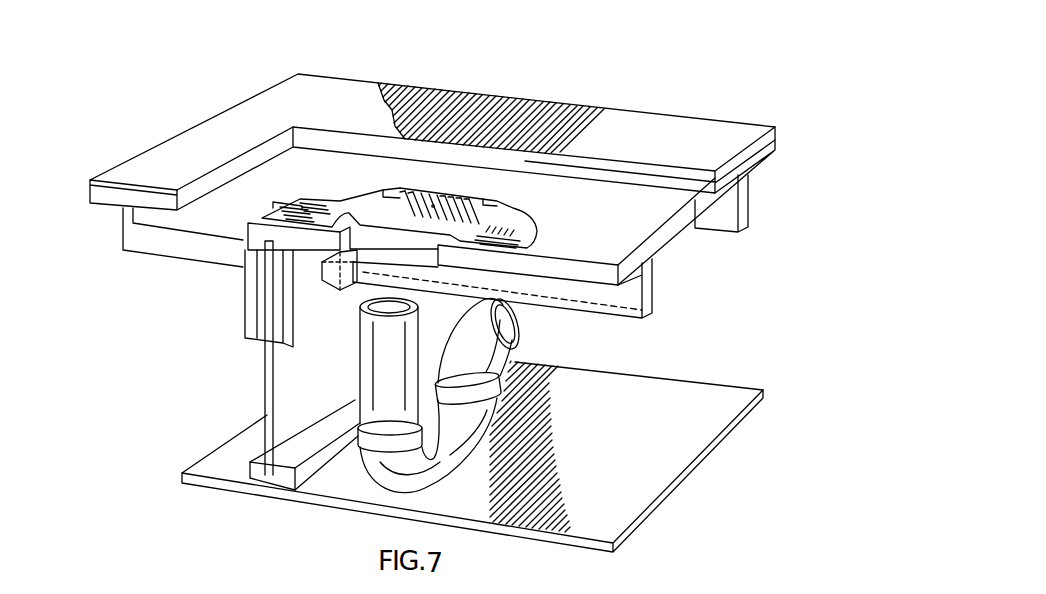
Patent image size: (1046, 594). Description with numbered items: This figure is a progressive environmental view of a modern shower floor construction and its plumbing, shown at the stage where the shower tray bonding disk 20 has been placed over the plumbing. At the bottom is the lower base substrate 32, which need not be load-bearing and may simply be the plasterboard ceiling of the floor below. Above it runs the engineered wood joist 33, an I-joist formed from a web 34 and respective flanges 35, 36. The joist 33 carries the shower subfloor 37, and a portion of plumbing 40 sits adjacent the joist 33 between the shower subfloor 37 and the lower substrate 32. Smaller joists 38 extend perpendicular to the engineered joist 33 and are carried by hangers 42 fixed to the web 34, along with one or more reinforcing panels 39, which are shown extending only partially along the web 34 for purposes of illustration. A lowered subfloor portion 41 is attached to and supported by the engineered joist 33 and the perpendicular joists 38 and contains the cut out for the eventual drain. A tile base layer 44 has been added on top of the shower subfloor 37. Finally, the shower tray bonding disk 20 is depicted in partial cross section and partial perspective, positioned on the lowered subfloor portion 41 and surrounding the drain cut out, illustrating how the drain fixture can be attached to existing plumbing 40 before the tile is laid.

The shower tray bonding disk 20 is at (528, 216).
The lower base substrate 32 is at (688, 433).
The engineered wood joist 33 is at (228, 388).
The web 34 is at (326, 408).
The flange 35 is at (258, 477).
The flange 36 is at (257, 238).
The shower subfloor 37 is at (760, 158).
The smaller joists 38 is at (165, 244).
The reinforcing panels 39 is at (245, 310).
The plumbing 40 is at (549, 318).
The lowered subfloor portion 41 is at (680, 234).
The hangers 42 is at (340, 278).
The tile base layer 44 is at (664, 130).